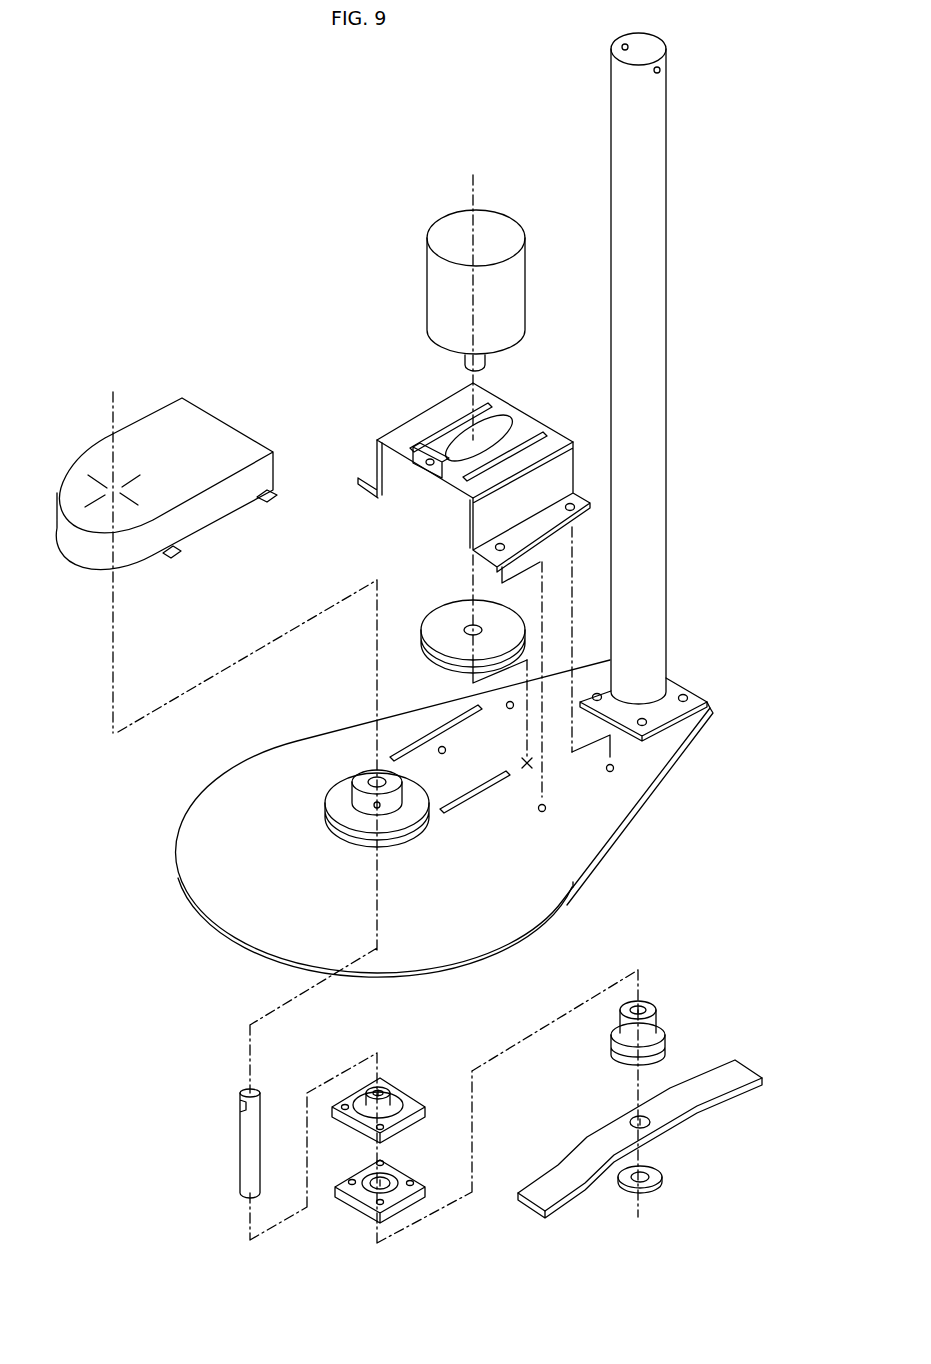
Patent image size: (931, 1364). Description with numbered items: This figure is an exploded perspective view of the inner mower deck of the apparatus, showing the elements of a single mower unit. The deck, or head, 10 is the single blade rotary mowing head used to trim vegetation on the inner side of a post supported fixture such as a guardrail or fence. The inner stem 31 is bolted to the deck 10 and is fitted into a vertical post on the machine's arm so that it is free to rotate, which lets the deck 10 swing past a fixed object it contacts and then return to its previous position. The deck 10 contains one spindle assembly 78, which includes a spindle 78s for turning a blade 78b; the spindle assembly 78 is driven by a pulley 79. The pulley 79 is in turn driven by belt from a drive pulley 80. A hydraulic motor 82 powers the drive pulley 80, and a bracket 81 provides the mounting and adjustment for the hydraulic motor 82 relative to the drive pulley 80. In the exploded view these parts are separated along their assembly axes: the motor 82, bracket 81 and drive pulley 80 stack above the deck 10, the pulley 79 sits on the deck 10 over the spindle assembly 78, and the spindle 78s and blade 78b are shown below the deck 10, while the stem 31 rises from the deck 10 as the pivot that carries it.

The head 10 is at (490, 890).
The stem 31 is at (656, 628).
The spindle assembly 78 is at (424, 1120).
The blade 78b is at (697, 1128).
The spindle 78s is at (238, 1143).
The pulley 79 is at (335, 832).
The drive pulley 80 is at (458, 611).
The bracket 81 is at (500, 520).
The hydraulic motor 82 is at (515, 329).